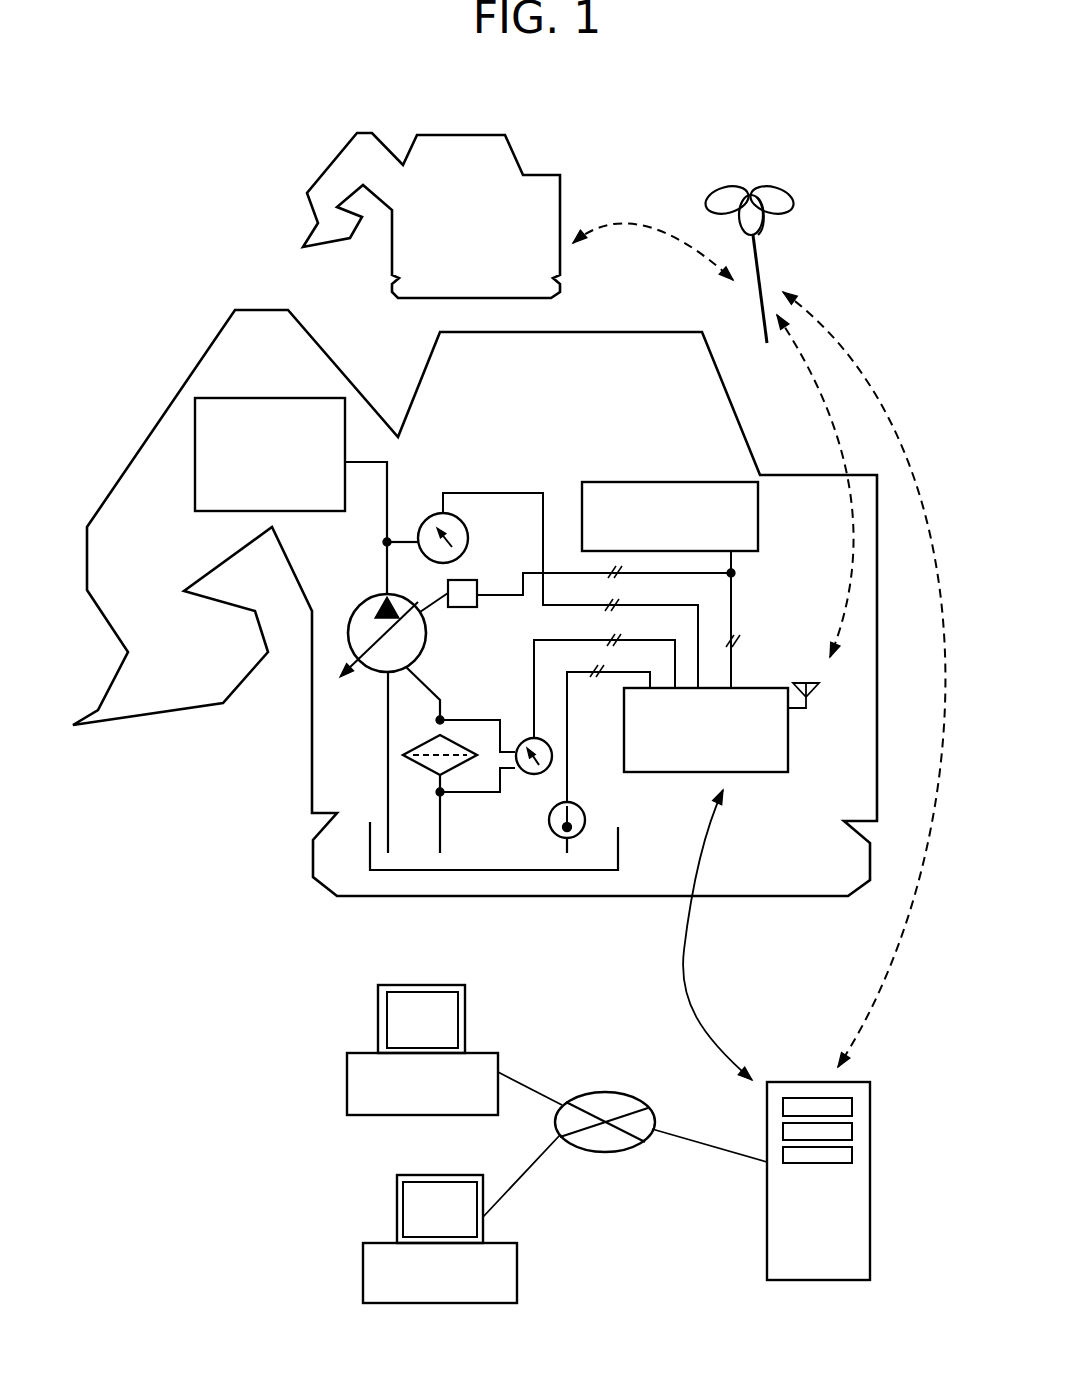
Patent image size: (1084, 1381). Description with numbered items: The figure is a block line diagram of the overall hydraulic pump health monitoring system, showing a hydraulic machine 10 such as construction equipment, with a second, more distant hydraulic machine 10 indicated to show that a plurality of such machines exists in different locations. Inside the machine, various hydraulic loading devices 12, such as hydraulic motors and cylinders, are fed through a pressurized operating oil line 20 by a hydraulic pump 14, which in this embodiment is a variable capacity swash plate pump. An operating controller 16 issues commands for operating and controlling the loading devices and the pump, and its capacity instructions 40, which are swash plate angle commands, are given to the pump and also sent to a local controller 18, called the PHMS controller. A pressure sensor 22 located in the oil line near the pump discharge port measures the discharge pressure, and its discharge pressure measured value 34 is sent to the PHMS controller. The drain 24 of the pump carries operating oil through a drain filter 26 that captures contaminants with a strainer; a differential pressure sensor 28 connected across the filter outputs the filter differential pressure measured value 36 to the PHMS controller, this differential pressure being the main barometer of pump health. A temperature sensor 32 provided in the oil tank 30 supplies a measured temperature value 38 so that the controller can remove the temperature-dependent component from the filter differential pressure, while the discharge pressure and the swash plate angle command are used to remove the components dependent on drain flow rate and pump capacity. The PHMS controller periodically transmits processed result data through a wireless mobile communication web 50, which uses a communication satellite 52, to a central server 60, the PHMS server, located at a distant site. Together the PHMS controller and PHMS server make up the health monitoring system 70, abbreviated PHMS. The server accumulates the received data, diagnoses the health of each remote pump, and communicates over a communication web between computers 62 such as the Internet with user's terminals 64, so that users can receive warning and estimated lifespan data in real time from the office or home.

The hydraulic machine 10 is at (447, 188).
The hydraulic loading devices 12 is at (279, 398).
The hydraulic pump 14 is at (364, 602).
The operating controller 16 is at (760, 509).
The local controller (PHMS controller) 18 is at (755, 773).
The pressurized operating oil line 20 is at (386, 562).
The pressure sensor 22 is at (425, 516).
The drain 24 is at (420, 668).
The drain filter 26 is at (423, 747).
The differential pressure sensor 28 is at (525, 740).
The oil tank 30 is at (370, 838).
The temperature sensor 32 is at (586, 813).
The discharge pressure measured value 34 is at (700, 617).
The filter differential pressure measured value 36 is at (677, 671).
The measured temperature value 38 is at (568, 771).
The capacity instructions (swash plate angle command) 40 is at (735, 584).
The wireless mobile communication web / communication satellite 50 is at (807, 257).
The communication satellite 52 is at (757, 195).
The central server (PHMS server) 60 is at (802, 1082).
The communication web between computers 62 is at (603, 1093).
The user's terminal 64 is at (420, 985).
The health monitoring system (PHMS) 70 is at (663, 981).